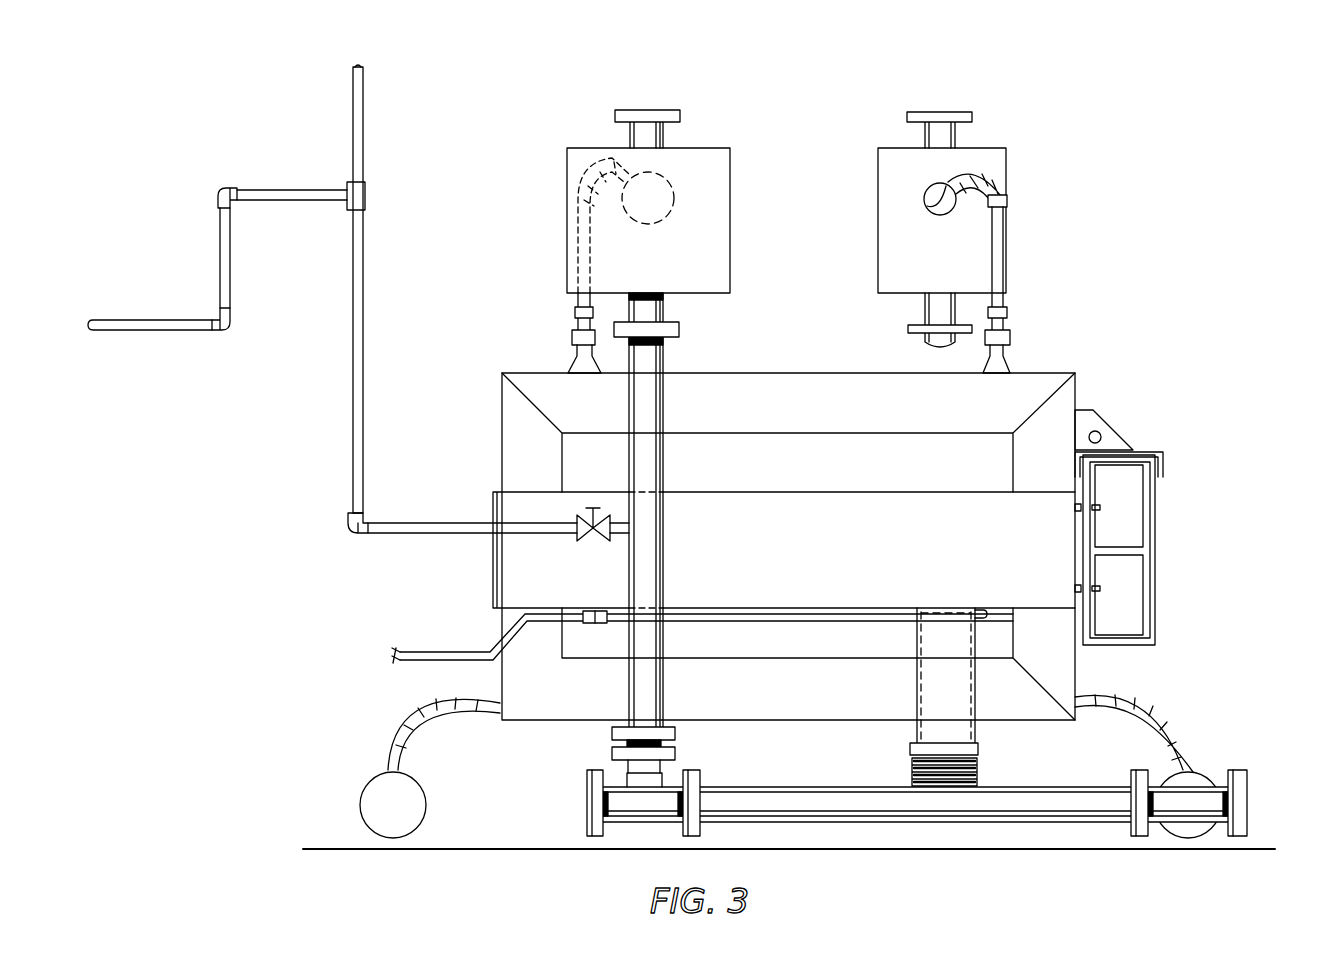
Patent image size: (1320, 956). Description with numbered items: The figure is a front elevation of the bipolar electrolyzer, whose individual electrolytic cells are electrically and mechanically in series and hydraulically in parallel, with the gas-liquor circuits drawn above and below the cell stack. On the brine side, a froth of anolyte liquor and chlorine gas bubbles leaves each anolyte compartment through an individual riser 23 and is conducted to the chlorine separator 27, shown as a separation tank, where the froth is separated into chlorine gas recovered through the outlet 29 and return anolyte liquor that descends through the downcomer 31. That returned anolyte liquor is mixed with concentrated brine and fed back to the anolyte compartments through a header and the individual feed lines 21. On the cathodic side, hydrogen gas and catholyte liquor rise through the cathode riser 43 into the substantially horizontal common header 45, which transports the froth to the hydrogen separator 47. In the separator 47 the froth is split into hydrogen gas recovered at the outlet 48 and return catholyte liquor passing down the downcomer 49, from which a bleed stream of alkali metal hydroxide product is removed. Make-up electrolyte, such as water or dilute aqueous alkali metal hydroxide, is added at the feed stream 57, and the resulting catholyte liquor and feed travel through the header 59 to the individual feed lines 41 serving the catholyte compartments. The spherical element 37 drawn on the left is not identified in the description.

The individual feed lines 21 is at (418, 719).
The anolyte and chlorine riser 23 is at (1003, 266).
The chlorine separator 27 is at (1008, 166).
The chlorine outlet 29 is at (946, 111).
The downcomer 31 is at (932, 313).
The float ball 37 is at (426, 791).
The individual feed lines 41 is at (1160, 716).
The cathode riser 43 is at (578, 326).
The common header 45 is at (672, 185).
The hydrogen separator 47 is at (732, 190).
The hydrogen outlet 48 is at (657, 110).
The downcomer 49 is at (664, 355).
The feed stream 57 is at (588, 796).
The header 59 is at (1202, 775).